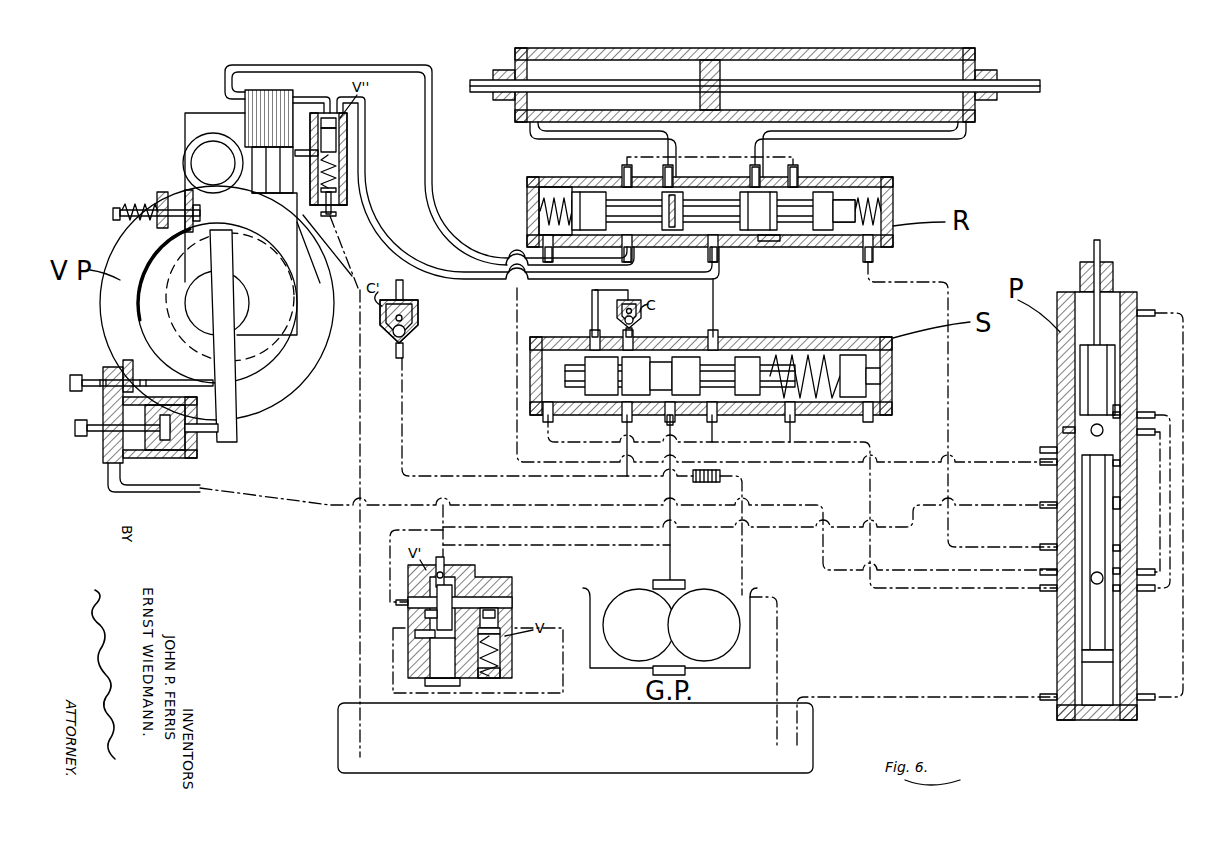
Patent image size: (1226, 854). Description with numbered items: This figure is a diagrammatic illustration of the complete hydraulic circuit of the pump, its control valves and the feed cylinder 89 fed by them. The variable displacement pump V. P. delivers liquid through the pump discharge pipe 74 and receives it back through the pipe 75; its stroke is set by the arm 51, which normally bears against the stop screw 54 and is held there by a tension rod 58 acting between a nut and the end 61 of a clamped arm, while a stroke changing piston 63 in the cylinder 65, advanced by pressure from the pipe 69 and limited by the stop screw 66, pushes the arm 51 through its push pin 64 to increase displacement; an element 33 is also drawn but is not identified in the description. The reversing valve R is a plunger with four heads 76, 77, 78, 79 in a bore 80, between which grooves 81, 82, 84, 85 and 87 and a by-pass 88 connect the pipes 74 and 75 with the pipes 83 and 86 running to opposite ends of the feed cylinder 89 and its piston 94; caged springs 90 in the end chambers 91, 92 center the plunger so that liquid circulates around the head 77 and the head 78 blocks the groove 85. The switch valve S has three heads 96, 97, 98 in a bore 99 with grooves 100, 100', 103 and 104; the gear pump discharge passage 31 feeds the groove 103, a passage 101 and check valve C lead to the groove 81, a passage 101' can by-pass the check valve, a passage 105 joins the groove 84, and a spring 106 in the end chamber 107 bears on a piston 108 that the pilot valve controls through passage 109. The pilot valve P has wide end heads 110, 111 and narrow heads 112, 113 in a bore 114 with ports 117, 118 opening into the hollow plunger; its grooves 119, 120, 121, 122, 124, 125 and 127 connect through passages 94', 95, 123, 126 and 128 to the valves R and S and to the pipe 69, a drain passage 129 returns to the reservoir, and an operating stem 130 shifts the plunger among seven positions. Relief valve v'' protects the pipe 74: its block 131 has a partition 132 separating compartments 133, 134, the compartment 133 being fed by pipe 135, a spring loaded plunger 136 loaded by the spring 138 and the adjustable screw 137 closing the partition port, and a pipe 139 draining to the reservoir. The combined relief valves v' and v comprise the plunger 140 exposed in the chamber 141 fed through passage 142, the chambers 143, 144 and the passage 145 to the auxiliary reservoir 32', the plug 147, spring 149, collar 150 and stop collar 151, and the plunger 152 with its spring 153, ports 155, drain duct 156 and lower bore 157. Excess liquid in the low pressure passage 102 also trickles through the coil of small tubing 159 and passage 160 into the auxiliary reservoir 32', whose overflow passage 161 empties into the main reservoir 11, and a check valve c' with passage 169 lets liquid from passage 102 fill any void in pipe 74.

The main reservoir 11 is at (690, 752).
The discharge passage 31 is at (671, 542).
The auxiliary reservoir 32' is at (670, 621).
The valve plate wheel 33 is at (290, 380).
The arm 51 is at (236, 436).
The stop screw 54 is at (85, 380).
The tension rod 58 is at (114, 212).
The end of arm 61 is at (172, 205).
The piston 63 is at (197, 452).
The push pin 64 is at (230, 432).
The cylinder 65 is at (160, 452).
The stop screw 66 is at (88, 432).
The pipe 69 is at (194, 492).
The pump discharge pipe 74 is at (372, 243).
The pipe 75 is at (433, 190).
The head 76 is at (590, 200).
The head 77 is at (680, 178).
The head 78 is at (768, 200).
The head 79 is at (832, 200).
The bore 80 is at (736, 238).
The annular groove 81 is at (630, 246).
The second groove 82 is at (672, 238).
The pipe 83 is at (534, 139).
The third groove 84 is at (714, 250).
The fourth groove 85 is at (770, 243).
The pipe 86 is at (962, 140).
The fifth groove 87 is at (866, 250).
The by-pass 88 is at (754, 165).
The feed cylinder 89 is at (930, 70).
The caged springs 90 is at (540, 211).
The end chamber 91 is at (548, 190).
The end chamber 92 is at (882, 192).
The piston 94 is at (755, 85).
The passage 94' is at (766, 375).
The passage 95 is at (948, 355).
The head 96 is at (602, 406).
The head 97 is at (686, 358).
The head 98 is at (742, 357).
The bore 99 is at (640, 352).
The annular groove 100 is at (644, 445).
The groove 100' is at (569, 315).
The passage 101 is at (630, 272).
The passage 101' is at (587, 299).
The passage 102 is at (616, 477).
The groove 103 is at (673, 418).
The third groove 104 is at (714, 418).
The passage 105 is at (714, 316).
The spring 106 is at (800, 348).
The end chamber 107 is at (860, 352).
The piston 108 is at (808, 418).
The passage 109 is at (870, 424).
The end head 110 is at (1096, 622).
The end head 111 is at (1097, 393).
The intermediate head 112 is at (1040, 572).
The intermediate head 113 is at (1040, 450).
The bore 114 is at (1096, 682).
The port 117 is at (1170, 582).
The port 118 is at (1070, 430).
The annular groove 119 is at (1125, 590).
The groove 120 is at (1125, 572).
The groove 121 is at (1125, 548).
The groove 122 is at (1125, 500).
The passage 123 is at (542, 528).
The groove 124 is at (1125, 466).
The groove 125 is at (1152, 415).
The passage 126 is at (1180, 502).
The groove 127 is at (1135, 407).
The passage 128 is at (1160, 434).
The drain passage 129 is at (1013, 698).
The operating stem 130 is at (1094, 250).
The block 131 is at (345, 152).
The partition 132 is at (336, 138).
The compartment 133 is at (336, 123).
The compartment 134 is at (330, 157).
The pipe 135 is at (326, 112).
The plunger 136 is at (332, 168).
The adjustable screw 137 is at (338, 226).
The spring 138 is at (334, 186).
The pipe 139 is at (290, 205).
The plunger 140 is at (475, 583).
The chamber 141 is at (408, 583).
The passage 142 is at (446, 575).
The chamber 143 is at (505, 600).
The chamber 144 is at (408, 611).
The passage 145 is at (408, 628).
The plug 147 is at (443, 690).
The spring 149 is at (408, 666).
The collar 150 is at (432, 652).
The stop collar 151 is at (415, 636).
The plunger 152 is at (498, 625).
The spring 153 is at (500, 645).
The ports 155 is at (512, 602).
The drain duct 156 is at (500, 660).
The lower bore 157 is at (500, 675).
The coil of small tubing 159 is at (745, 480).
The passage 160 is at (743, 565).
The overflow passage 161 is at (778, 636).
The passage 169 is at (402, 411).